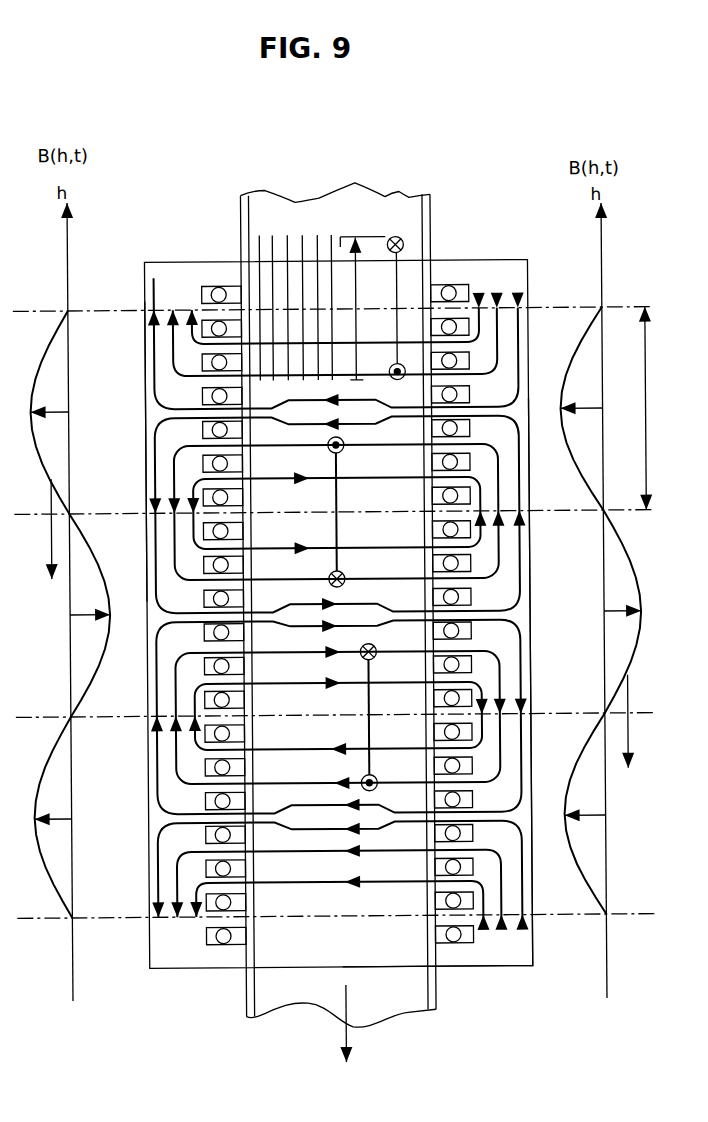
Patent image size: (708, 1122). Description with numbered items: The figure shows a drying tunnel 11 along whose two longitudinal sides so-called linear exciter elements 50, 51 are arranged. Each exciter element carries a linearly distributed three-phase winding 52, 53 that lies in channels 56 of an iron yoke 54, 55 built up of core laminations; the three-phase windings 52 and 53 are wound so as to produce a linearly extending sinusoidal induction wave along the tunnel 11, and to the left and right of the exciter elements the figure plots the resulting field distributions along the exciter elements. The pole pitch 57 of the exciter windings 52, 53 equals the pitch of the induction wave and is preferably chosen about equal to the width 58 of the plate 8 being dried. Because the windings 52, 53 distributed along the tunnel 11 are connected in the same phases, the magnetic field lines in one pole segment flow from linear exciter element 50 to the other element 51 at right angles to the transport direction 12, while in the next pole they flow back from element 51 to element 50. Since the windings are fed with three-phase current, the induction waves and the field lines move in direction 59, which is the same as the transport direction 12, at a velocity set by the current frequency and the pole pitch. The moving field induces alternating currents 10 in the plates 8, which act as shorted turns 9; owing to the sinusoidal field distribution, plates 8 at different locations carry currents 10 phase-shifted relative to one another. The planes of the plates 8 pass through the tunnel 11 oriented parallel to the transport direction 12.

The plate 8 is at (260, 247).
The shorted turn 9 is at (388, 247).
The alternating currents 10 is at (407, 237).
The tunnel 11 is at (428, 212).
The transport direction 12 is at (355, 1027).
The linear exciter element 50 is at (497, 945).
The linear exciter element 51 is at (172, 948).
The three-phase winding 52 is at (452, 290).
The three-phase winding 53 is at (214, 290).
The iron yoke 54 is at (534, 566).
The iron yoke 55 is at (147, 460).
The channel 56 is at (477, 357).
The pole pitch 57 is at (647, 398).
The width of plate 58 is at (353, 295).
The direction of field movement 59 is at (38, 545).